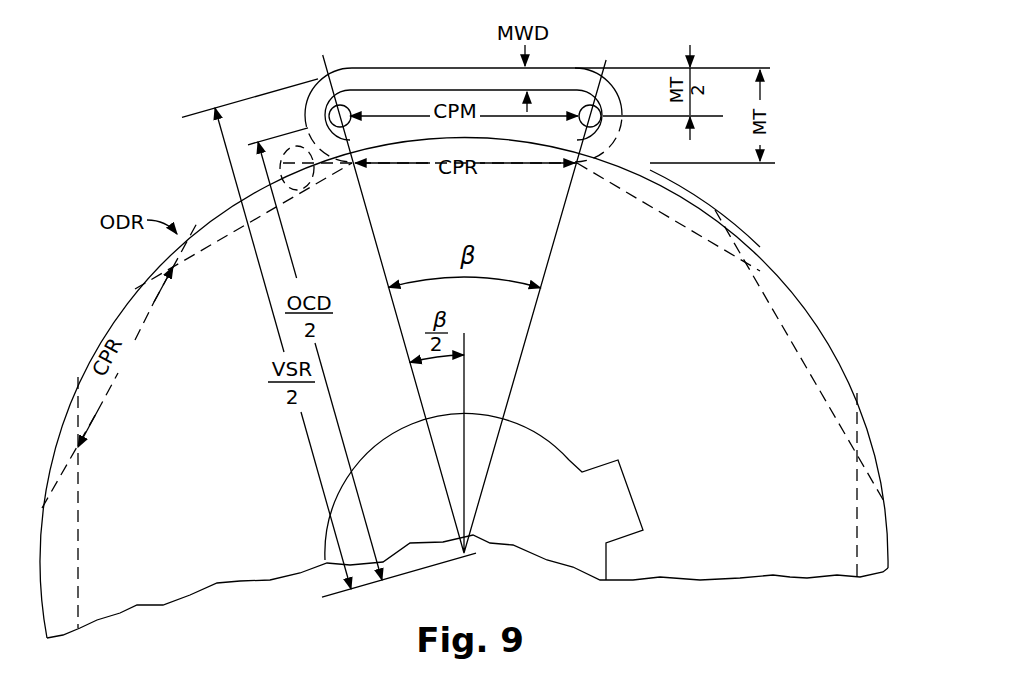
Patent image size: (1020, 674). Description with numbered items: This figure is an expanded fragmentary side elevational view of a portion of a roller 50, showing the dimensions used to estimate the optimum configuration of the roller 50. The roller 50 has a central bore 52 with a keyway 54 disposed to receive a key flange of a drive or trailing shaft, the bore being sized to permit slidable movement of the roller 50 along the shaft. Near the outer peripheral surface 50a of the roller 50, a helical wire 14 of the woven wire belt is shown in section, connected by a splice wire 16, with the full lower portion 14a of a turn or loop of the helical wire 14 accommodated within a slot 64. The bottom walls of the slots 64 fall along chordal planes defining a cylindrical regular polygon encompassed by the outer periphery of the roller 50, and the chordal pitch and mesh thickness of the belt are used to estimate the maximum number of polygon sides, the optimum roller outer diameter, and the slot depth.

The helical wire 14 is at (565, 67).
The lower portion of helical wire loop 14a is at (417, 140).
The splice wire 16 is at (347, 106).
The roller 50 is at (768, 250).
The outer peripheral surface 50a is at (707, 204).
The central bore 52 is at (568, 452).
The keyway 54 is at (633, 483).
The slot 64 is at (221, 211).